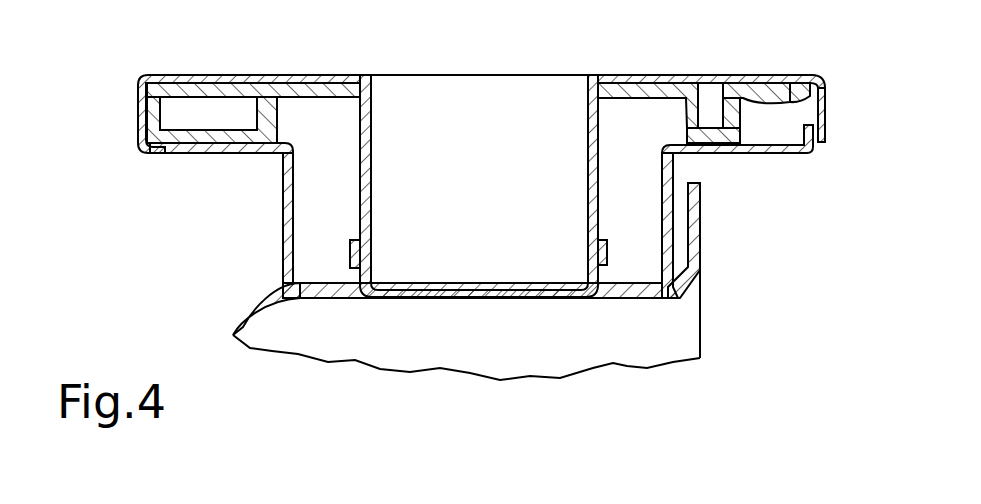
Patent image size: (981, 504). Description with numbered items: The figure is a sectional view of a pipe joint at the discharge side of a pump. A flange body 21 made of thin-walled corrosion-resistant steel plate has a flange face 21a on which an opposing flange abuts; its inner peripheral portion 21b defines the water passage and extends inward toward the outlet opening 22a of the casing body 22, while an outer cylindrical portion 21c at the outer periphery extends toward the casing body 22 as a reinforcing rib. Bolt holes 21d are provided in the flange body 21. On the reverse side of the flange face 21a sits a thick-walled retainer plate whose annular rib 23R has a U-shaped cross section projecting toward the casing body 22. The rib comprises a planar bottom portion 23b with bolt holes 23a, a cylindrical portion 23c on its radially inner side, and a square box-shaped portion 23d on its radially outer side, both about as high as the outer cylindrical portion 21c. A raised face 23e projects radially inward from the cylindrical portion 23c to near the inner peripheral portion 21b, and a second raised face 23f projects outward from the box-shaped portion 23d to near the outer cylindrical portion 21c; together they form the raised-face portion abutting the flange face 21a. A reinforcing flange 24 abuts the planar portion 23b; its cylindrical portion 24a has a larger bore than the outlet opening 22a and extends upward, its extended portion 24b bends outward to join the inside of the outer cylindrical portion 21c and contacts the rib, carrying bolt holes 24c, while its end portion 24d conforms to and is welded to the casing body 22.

The flange body 21 is at (627, 66).
The flange face 21a is at (733, 78).
The inner peripheral portion 21b is at (590, 197).
The outer cylindrical portion 21c is at (827, 118).
The bolt holes 21d is at (193, 73).
The casing body 22 is at (705, 260).
The outlet opening 22a is at (367, 280).
The bolt holes 23a is at (192, 136).
The planar bottom portion 23b is at (710, 147).
The cylindrical portion 23c is at (705, 143).
The square box-shaped portion 23d is at (828, 98).
The raised face 23e is at (338, 58).
The raised face 23f is at (793, 88).
The annular rib 23R is at (742, 133).
The reinforcing flange 24 is at (277, 280).
The cylindrical portion 24a is at (283, 237).
The extended portion 24b is at (752, 148).
The bolt holes 24c is at (237, 151).
The end portion 24d is at (648, 298).